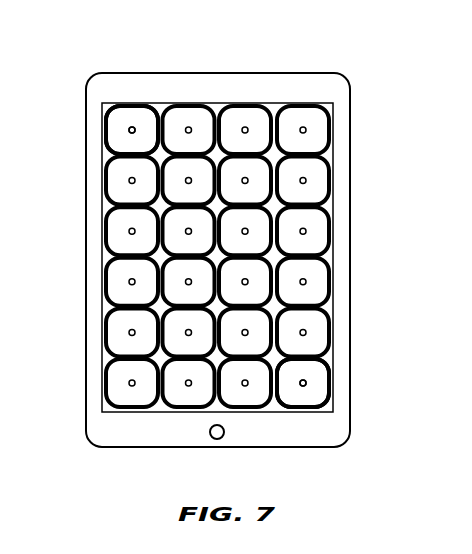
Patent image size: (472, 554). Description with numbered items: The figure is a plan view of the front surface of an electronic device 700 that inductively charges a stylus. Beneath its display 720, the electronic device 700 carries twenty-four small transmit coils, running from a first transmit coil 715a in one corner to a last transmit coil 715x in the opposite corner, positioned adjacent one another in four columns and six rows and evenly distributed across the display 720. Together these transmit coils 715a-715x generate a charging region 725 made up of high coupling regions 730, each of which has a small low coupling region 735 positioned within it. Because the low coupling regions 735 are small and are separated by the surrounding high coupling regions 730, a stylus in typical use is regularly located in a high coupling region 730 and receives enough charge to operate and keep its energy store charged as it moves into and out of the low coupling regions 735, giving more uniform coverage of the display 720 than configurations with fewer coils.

The electronic device 700 is at (361, 48).
The display 720 is at (335, 105).
The charging region 725 is at (219, 243).
The high coupling regions 730 is at (114, 124).
The low coupling regions 735 is at (132, 125).
The transmit coil 715a is at (110, 130).
The transmit coil 715x is at (317, 386).